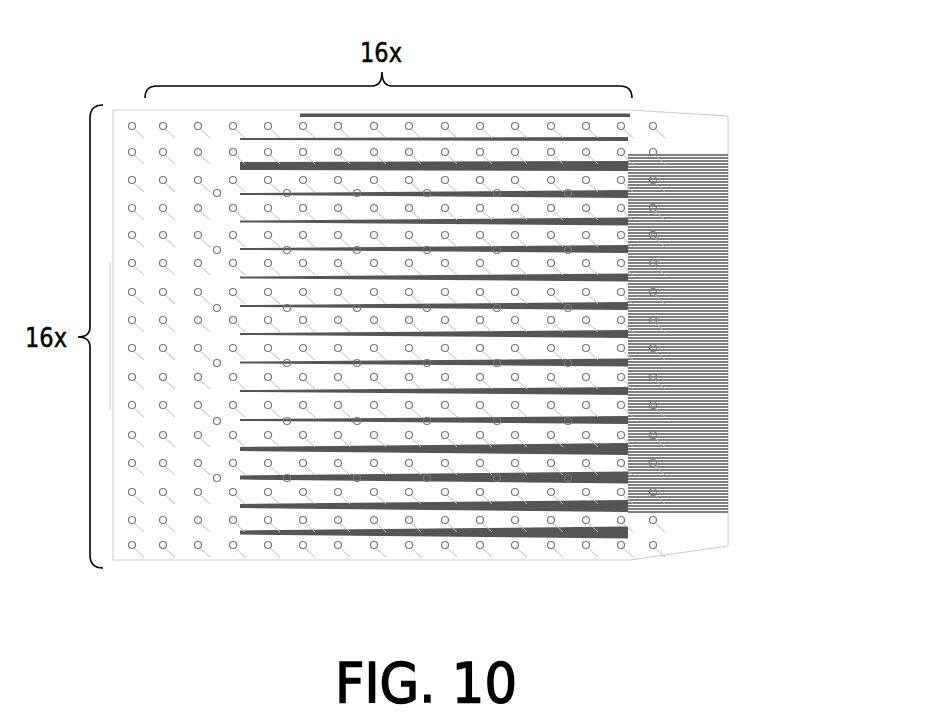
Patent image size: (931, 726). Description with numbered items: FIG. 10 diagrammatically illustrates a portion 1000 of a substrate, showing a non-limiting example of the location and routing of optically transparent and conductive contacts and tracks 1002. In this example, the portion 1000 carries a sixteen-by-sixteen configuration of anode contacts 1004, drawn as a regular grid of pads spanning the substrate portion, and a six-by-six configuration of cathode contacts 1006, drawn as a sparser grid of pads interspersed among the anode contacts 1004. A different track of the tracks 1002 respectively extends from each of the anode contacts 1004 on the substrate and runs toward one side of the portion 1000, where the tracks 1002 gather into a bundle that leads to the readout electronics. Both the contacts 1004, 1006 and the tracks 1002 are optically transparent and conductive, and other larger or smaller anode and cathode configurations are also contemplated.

The portion of the substrate 1000 is at (717, 78).
The tracks 1002 is at (741, 166).
The anode contacts 1004 is at (660, 592).
The cathode contacts 1006 is at (542, 592).